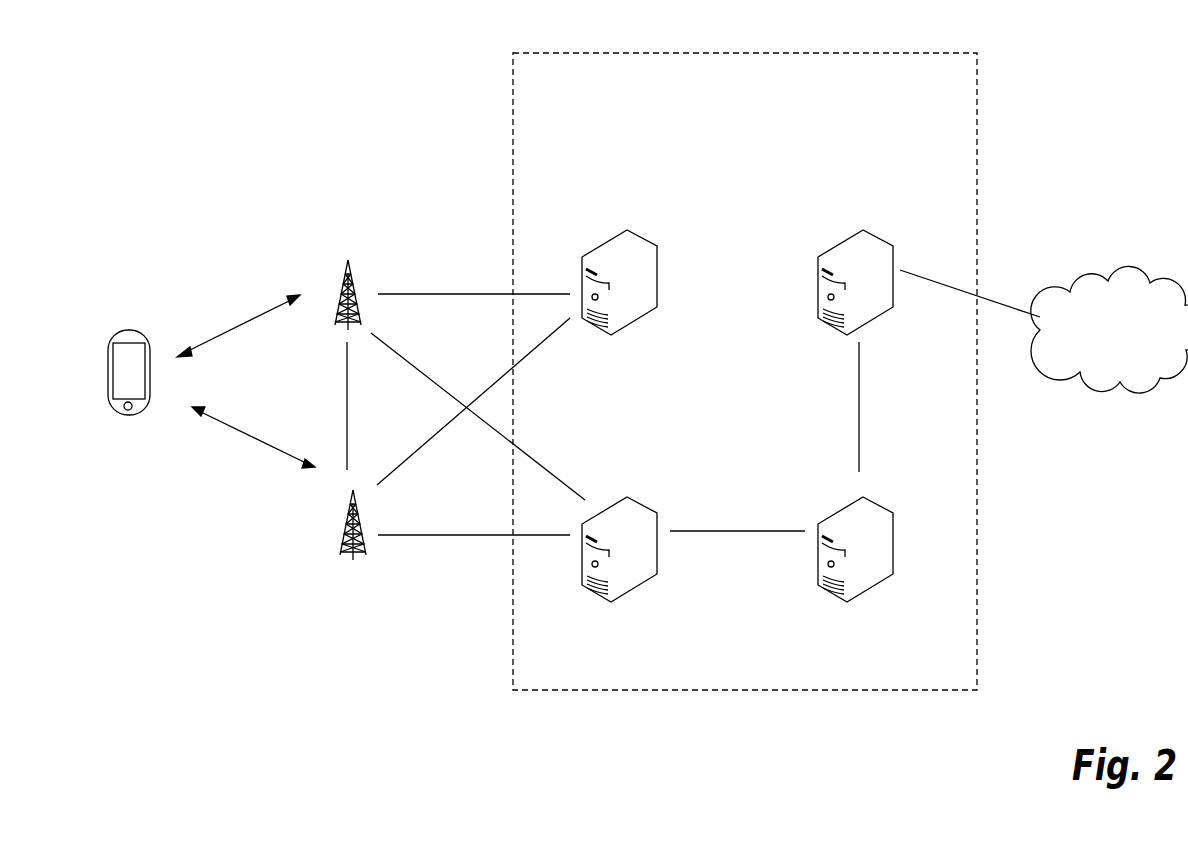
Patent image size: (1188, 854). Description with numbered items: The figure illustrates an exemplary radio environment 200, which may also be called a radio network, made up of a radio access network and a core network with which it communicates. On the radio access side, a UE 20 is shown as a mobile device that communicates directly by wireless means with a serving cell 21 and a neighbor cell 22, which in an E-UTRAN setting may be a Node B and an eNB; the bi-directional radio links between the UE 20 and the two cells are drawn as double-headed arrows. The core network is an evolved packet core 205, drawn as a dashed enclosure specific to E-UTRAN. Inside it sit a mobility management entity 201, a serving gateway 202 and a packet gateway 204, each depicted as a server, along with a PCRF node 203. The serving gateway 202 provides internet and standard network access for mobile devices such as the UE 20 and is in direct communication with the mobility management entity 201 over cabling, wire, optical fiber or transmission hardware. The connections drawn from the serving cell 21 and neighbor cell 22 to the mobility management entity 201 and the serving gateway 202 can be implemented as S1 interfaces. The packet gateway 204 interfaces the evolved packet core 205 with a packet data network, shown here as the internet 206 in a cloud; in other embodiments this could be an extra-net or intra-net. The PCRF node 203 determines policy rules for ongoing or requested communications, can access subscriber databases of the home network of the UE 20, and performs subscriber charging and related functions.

The radio environment 200 is at (303, 145).
The UE 20 is at (127, 395).
The serving cell 21 is at (351, 351).
The neighbor cell 22 is at (351, 544).
The mobility management entity 201 is at (631, 237).
The serving gateway 202 is at (620, 582).
The PCRF node 203 is at (862, 255).
The packet gateway 204 is at (852, 581).
The evolved packet core 205 is at (745, 371).
The internet 206 is at (1109, 329).